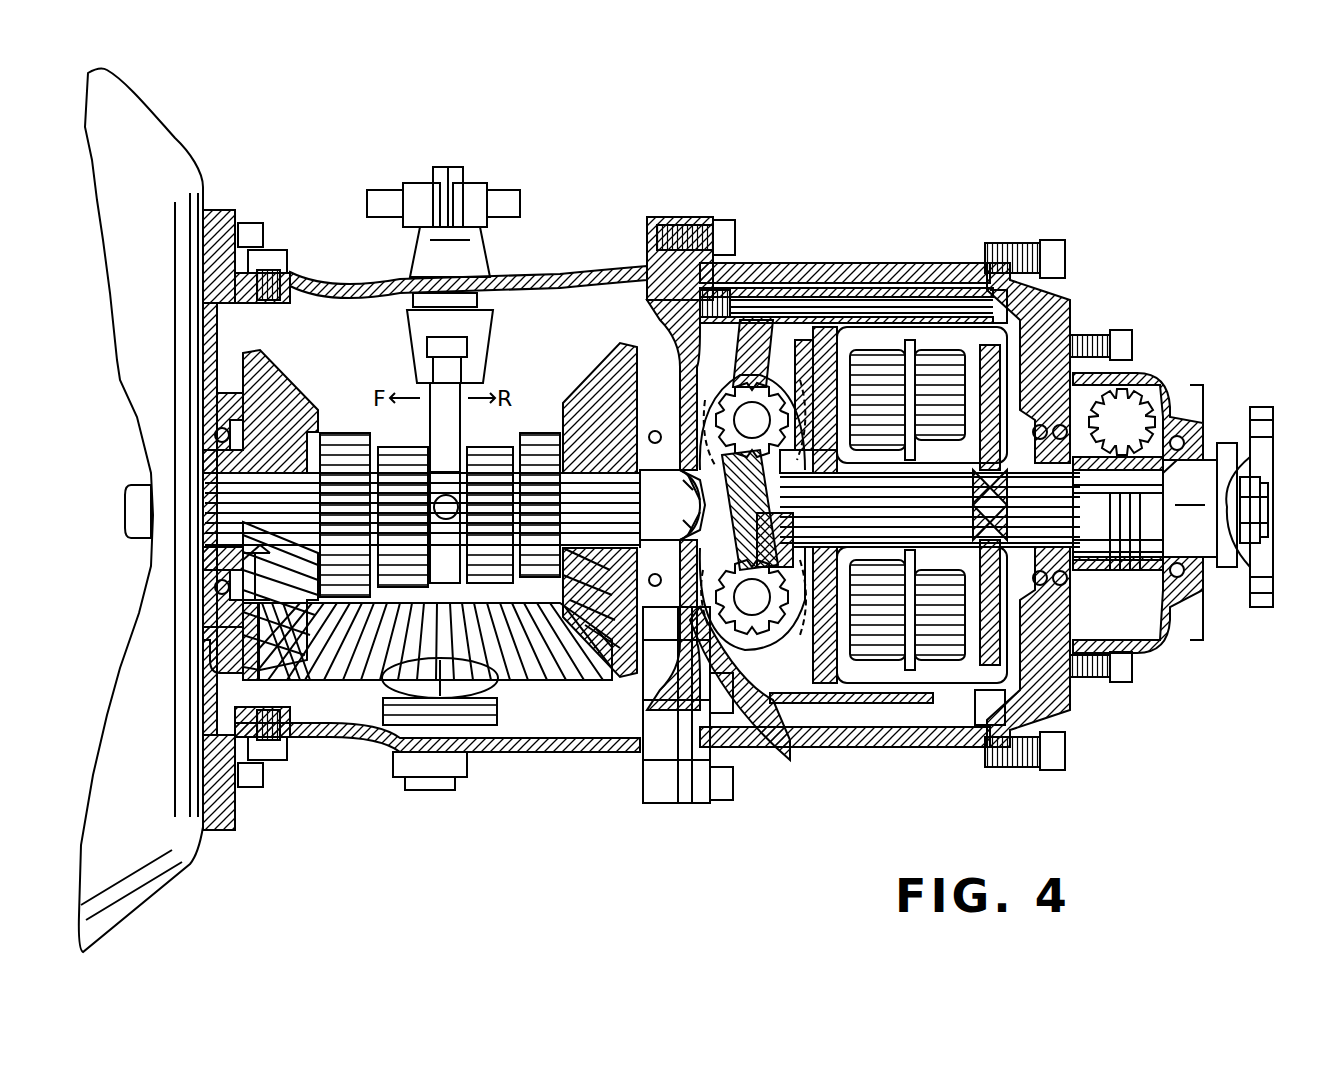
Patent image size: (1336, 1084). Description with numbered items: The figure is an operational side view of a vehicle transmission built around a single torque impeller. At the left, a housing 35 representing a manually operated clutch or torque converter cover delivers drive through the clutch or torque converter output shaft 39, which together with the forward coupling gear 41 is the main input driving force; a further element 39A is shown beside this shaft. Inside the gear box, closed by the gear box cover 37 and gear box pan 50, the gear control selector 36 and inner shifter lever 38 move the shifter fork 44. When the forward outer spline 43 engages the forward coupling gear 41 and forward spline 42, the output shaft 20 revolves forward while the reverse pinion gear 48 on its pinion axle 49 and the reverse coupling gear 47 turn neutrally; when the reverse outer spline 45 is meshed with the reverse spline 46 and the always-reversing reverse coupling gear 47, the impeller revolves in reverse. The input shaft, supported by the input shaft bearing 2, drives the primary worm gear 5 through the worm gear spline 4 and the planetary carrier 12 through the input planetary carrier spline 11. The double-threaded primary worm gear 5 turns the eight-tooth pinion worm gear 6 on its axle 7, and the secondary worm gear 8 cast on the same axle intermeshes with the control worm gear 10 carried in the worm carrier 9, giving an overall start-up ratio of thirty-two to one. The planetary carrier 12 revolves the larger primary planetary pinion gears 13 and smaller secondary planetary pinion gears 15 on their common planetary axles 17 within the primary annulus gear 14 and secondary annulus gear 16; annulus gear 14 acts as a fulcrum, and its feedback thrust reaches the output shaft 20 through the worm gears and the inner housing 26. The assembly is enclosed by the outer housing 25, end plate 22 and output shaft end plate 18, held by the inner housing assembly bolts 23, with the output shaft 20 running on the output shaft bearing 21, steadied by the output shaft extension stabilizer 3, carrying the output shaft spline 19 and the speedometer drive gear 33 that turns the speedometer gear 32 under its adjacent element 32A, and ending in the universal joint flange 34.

The input shaft bearing 2 is at (654, 510).
The output shaft extension stabilizer 3 is at (650, 500).
The worm gear spline 4 is at (800, 523).
The primary worm gear 5 is at (780, 505).
The pinion worm gear 6 is at (770, 437).
The pinion worm gear axle 7 is at (753, 422).
The secondary worm gear 8 is at (753, 599).
The worm carrier 9 is at (760, 342).
The control worm gear 10 is at (812, 365).
The input planetary carrier spline 11 is at (930, 508).
The planetary carrier 12 is at (795, 482).
The primary planetary pinion gear 13 is at (885, 395).
The primary annulus gear 14 is at (865, 345).
The secondary planetary pinion gear 15 is at (1000, 355).
The secondary annulus gear 16 is at (940, 492).
The planetary axle 17 is at (1000, 400).
The output shaft end plate 18 is at (1085, 565).
The output shaft spline 19 is at (1085, 525).
The output shaft 20 is at (1200, 505).
The output shaft bearing 21 is at (1070, 600).
The end plate 22 is at (1062, 312).
The inner housing assembly bolt 23 is at (1025, 700).
The outer housing 25 is at (968, 275).
The inner housing 26 is at (790, 290).
The speedometer gear 32 is at (1122, 422).
The sprocket cover 32A is at (1150, 382).
The speedometer drive gear 33 is at (1135, 565).
The universal joint flange 34 is at (1260, 436).
The clutch or torque converter cover 35 is at (180, 152).
The gear control selector 36 is at (367, 205).
The gear box cover 37 is at (378, 283).
The inner shifter lever 38 is at (420, 325).
The clutch or torque converter output shaft 39 is at (130, 505).
The bearing 39A is at (215, 435).
The forward coupling gear 41 is at (260, 511).
The forward spline 42 is at (345, 495).
The forward outer spline 43 is at (402, 470).
The shifter fork 44 is at (455, 398).
The reverse outer spline 45 is at (485, 470).
The reverse spline 46 is at (540, 470).
The reverse coupling gear 47 is at (600, 510).
The reverse pinion gear 48 is at (318, 665).
The pinion axle 49 is at (395, 680).
The gear box pan 50 is at (385, 745).